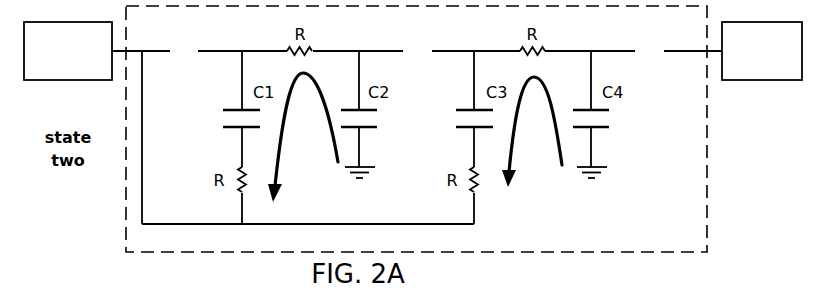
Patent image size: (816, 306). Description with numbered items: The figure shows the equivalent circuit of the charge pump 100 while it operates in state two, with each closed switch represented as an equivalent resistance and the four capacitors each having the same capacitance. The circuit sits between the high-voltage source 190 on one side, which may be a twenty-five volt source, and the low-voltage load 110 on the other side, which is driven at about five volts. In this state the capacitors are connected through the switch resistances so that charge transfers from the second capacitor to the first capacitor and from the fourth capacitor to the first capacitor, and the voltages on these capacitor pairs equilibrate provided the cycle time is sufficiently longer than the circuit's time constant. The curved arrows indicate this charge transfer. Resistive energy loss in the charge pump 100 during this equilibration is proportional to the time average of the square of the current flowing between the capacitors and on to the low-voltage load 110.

The low-voltage load 110 is at (53, 60).
The high-voltage source 190 is at (747, 60).
The charge pump 100 is at (528, 238).